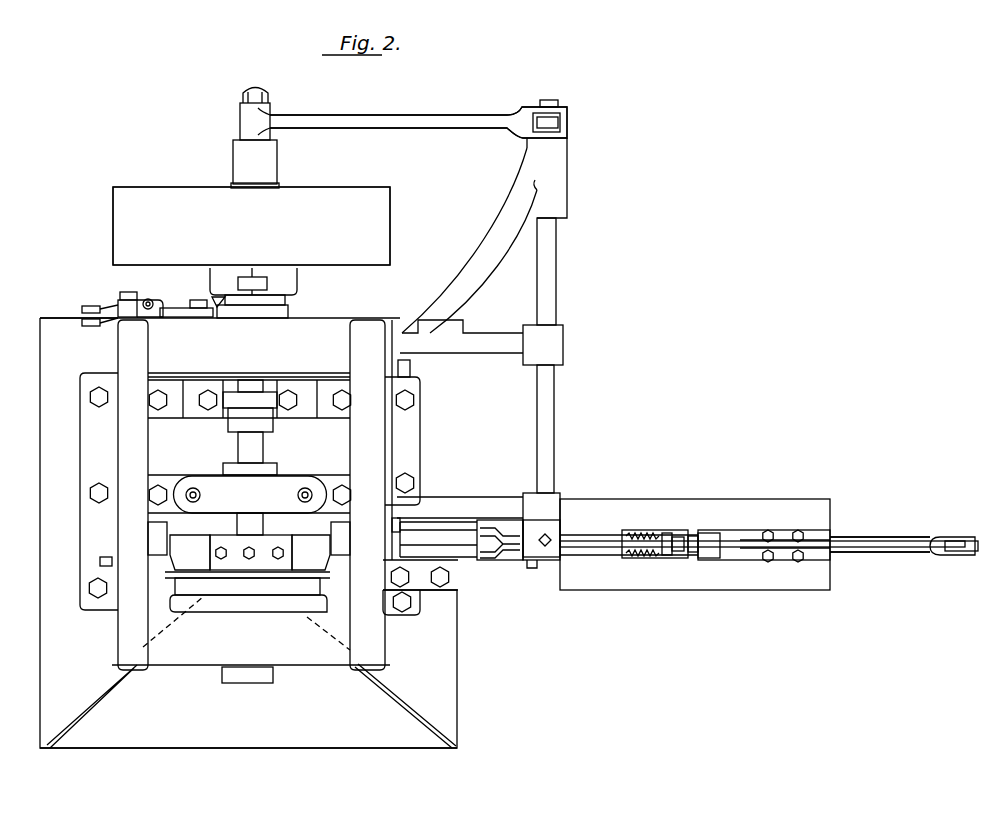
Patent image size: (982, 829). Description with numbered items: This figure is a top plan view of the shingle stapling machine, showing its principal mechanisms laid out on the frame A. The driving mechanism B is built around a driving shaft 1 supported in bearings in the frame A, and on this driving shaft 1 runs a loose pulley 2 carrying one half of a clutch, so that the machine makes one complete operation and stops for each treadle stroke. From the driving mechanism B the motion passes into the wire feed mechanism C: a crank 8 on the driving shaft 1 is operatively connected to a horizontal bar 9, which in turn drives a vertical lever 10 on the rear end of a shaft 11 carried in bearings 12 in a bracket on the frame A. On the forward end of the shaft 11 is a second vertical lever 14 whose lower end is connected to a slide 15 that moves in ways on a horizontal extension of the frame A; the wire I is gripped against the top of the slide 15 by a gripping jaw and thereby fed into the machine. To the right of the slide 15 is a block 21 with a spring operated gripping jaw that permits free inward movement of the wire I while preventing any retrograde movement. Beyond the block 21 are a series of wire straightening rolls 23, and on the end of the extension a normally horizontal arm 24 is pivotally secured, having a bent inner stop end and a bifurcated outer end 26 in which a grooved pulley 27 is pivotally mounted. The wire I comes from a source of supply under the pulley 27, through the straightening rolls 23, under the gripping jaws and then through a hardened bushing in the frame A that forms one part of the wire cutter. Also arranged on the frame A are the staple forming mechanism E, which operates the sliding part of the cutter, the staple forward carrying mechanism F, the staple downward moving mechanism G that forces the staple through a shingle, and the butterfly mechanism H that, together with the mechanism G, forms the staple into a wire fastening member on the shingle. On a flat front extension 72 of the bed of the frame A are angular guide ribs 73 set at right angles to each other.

The driving shaft 1 is at (258, 452).
The loose pulley 2 is at (124, 222).
The crank 8 is at (240, 126).
The horizontal bar 9 is at (428, 118).
The vertical lever 10 is at (562, 125).
The shaft 11 is at (556, 284).
The bearings 12 is at (557, 190).
The vertical lever 14 is at (545, 552).
The slide 15 is at (490, 550).
The block 21 is at (678, 556).
The wire straightening rolls 23 is at (756, 546).
The normally horizontal arm 24 is at (868, 550).
The bifurcated outer end 26 is at (921, 556).
The grooved pulley 27 is at (956, 556).
The flat front extension 72 is at (248, 729).
The angular guide ribs 73 is at (97, 705).
The frame A is at (128, 440).
The driving mechanism B is at (251, 226).
The wire feed mechanism C is at (368, 118).
The staple forming mechanism E is at (249, 541).
The staple forward carrying mechanism F is at (292, 488).
The staple downward moving mechanism G is at (207, 600).
The butterfly mechanism H is at (237, 410).
The wire I is at (896, 540).